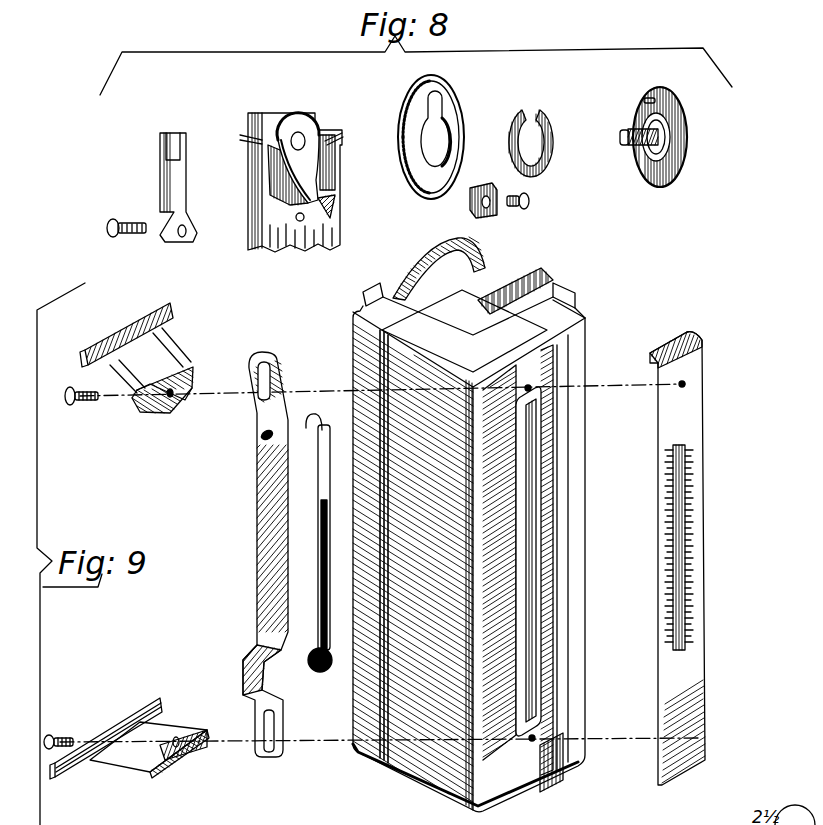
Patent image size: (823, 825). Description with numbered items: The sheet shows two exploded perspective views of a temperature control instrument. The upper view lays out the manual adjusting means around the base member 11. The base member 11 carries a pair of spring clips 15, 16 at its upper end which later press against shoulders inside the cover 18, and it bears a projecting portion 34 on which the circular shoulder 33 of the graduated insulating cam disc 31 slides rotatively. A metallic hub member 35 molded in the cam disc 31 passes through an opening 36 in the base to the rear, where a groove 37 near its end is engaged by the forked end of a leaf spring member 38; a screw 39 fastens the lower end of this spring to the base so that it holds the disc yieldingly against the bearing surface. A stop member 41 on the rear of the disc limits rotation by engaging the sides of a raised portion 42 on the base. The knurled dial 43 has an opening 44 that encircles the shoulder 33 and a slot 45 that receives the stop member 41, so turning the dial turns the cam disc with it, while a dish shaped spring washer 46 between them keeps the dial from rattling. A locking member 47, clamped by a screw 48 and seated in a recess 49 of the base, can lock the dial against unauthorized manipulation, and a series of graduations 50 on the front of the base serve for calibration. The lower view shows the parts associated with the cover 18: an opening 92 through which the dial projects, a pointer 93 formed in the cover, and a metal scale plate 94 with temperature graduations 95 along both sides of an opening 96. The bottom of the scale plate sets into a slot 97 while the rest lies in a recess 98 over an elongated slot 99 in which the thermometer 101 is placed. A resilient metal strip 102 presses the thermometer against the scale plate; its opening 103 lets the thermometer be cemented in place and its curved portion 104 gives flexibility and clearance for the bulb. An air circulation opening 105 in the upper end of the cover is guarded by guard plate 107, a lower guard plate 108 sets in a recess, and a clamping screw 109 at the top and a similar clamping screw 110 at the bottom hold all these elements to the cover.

In FIG. 8, the base member 11 is at (290, 248).
In FIG. 8, the spring clip 15 is at (244, 137).
In FIG. 8, the spring clip 16 is at (338, 134).
In FIG. 9, the cover 18 is at (586, 345).
In FIG. 8, the cam disc 31 is at (679, 108).
In FIG. 8, the bearing portion 33 is at (662, 138).
In FIG. 8, the projecting portion 34 is at (293, 116).
In FIG. 8, the hub member 35 is at (621, 138).
In FIG. 8, the opening 36 is at (302, 132).
In FIG. 8, the groove 37 is at (632, 122).
In FIG. 8, the leaf spring member 38 is at (168, 165).
In FIG. 8, the screw 39 is at (116, 222).
In FIG. 8, the stop member 41 is at (650, 97).
In FIG. 8, the raised portion 42 is at (312, 170).
In FIG. 8, the dial 43 is at (448, 92).
In FIG. 8, the opening 44 is at (446, 128).
In FIG. 8, the slot 45 is at (428, 103).
In FIG. 8, the spring washer 46 is at (538, 112).
In FIG. 8, the locking member 47 is at (486, 185).
In FIG. 8, the screw 48 is at (530, 202).
In FIG. 8, the recess 49 is at (333, 206).
In FIG. 8, the graduations 50 is at (276, 190).
In FIG. 9, the opening 92 is at (368, 296).
In FIG. 9, the pointer 93 is at (425, 275).
In FIG. 9, the scale plate 94 is at (688, 415).
In FIG. 9, the temperature graduations 95 is at (690, 500).
In FIG. 9, the opening 96 is at (692, 550).
In FIG. 9, the slot 97 is at (545, 765).
In FIG. 9, the recess 98 is at (540, 556).
In FIG. 9, the elongated slot 99 is at (538, 505).
In FIG. 9, the thermometer 101 is at (318, 672).
In FIG. 9, the resilient metal strip 102 is at (276, 508).
In FIG. 9, the opening 103 is at (259, 437).
In FIG. 9, the curved portion 104 is at (240, 670).
In FIG. 9, the opening 105 is at (500, 300).
In FIG. 9, the guard plate 107 is at (168, 340).
In FIG. 9, the guard plate 108 is at (141, 708).
In FIG. 9, the clamping screw 109 is at (87, 404).
In FIG. 9, the clamping screw 110 is at (60, 734).